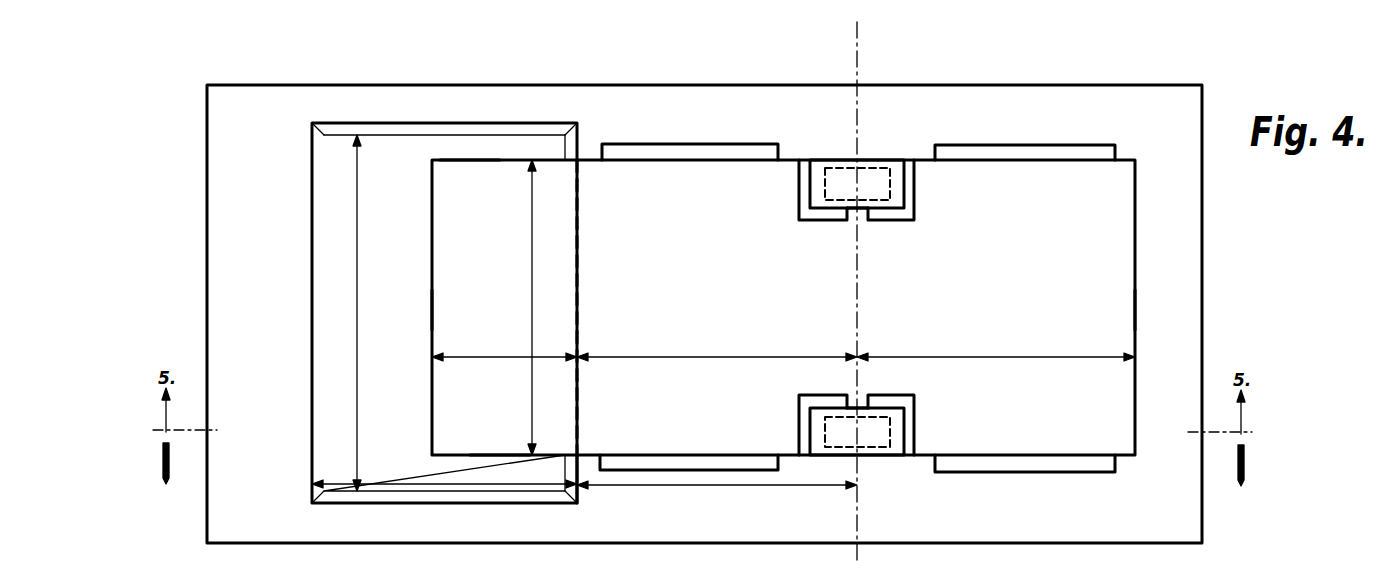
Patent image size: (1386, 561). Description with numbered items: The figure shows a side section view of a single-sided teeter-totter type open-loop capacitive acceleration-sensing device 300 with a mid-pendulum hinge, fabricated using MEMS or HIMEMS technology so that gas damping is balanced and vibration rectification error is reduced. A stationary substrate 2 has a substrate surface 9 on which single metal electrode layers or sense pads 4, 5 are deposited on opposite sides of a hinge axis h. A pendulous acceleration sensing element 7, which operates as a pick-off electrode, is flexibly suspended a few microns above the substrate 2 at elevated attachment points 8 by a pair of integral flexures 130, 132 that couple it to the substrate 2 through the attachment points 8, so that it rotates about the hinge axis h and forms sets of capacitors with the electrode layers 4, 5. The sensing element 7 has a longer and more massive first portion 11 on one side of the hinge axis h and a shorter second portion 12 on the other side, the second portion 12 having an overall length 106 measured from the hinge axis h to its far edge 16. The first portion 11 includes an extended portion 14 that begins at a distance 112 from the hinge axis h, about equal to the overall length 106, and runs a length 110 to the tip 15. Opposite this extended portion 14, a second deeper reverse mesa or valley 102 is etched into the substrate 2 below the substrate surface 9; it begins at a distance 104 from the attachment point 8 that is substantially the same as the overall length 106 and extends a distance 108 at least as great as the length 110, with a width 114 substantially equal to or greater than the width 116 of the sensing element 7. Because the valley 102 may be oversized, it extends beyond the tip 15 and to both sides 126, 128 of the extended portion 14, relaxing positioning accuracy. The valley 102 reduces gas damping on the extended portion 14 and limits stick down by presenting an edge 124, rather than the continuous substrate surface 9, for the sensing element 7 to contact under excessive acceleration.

The capacitive acceleration-sensing device 300 is at (1224, 82).
The substrate 2 is at (207, 132).
The electrode layer 4 is at (676, 144).
The electrode layer 5 is at (1026, 145).
The acceleration sensing element 7 is at (799, 160).
The attachment point 8 is at (872, 186).
The substrate surface 9 is at (736, 116).
The first sensing element portion 11 is at (686, 410).
The second sensing element portion 12 is at (1039, 410).
The extended portion 14 is at (468, 200).
The tip 15 is at (432, 308).
The far edge 16 is at (1136, 308).
The hinge axis h is at (860, 46).
The reverse mesa 102 is at (344, 184).
The distance 104 is at (720, 488).
The overall length 106 is at (990, 357).
The distance 108 is at (422, 484).
The length 110 is at (500, 357).
The distance 112 is at (708, 357).
The width 114 is at (357, 312).
The width 116 is at (531, 308).
The edge 124 is at (580, 492).
The side 126 is at (498, 457).
The side 128 is at (467, 160).
The flexure 130 is at (859, 400).
The flexure 132 is at (858, 216).